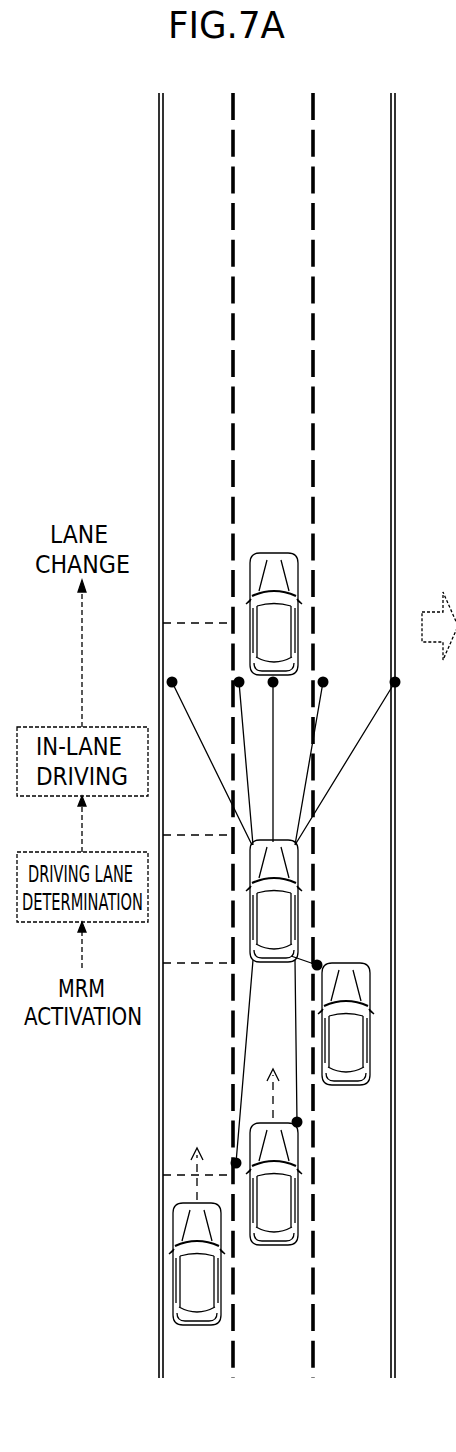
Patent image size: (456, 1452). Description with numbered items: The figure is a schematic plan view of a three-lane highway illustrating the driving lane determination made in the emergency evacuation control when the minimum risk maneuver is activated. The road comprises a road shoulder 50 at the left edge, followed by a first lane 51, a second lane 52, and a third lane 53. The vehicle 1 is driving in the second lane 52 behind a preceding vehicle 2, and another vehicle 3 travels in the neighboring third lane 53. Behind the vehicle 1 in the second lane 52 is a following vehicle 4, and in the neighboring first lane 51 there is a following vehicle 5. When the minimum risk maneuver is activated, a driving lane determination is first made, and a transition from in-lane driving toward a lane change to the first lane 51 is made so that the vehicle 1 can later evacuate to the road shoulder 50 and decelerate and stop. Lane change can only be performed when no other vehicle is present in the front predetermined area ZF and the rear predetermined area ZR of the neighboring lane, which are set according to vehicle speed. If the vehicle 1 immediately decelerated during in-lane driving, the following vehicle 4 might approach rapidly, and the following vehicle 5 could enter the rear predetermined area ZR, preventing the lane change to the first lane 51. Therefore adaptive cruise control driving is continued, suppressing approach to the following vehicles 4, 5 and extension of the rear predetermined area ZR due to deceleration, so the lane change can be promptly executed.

The vehicle 1 is at (297, 897).
The preceding vehicle 2 is at (298, 615).
The other vehicle 3 is at (368, 1030).
The following vehicle 4 is at (298, 1190).
The following vehicle 5 is at (196, 1325).
The road shoulder 50 is at (129, 132).
The first lane 51 is at (215, 132).
The second lane 52 is at (291, 132).
The third lane 53 is at (372, 132).
The front predetermined area ZF is at (205, 621).
The rear predetermined area ZR is at (183, 1176).